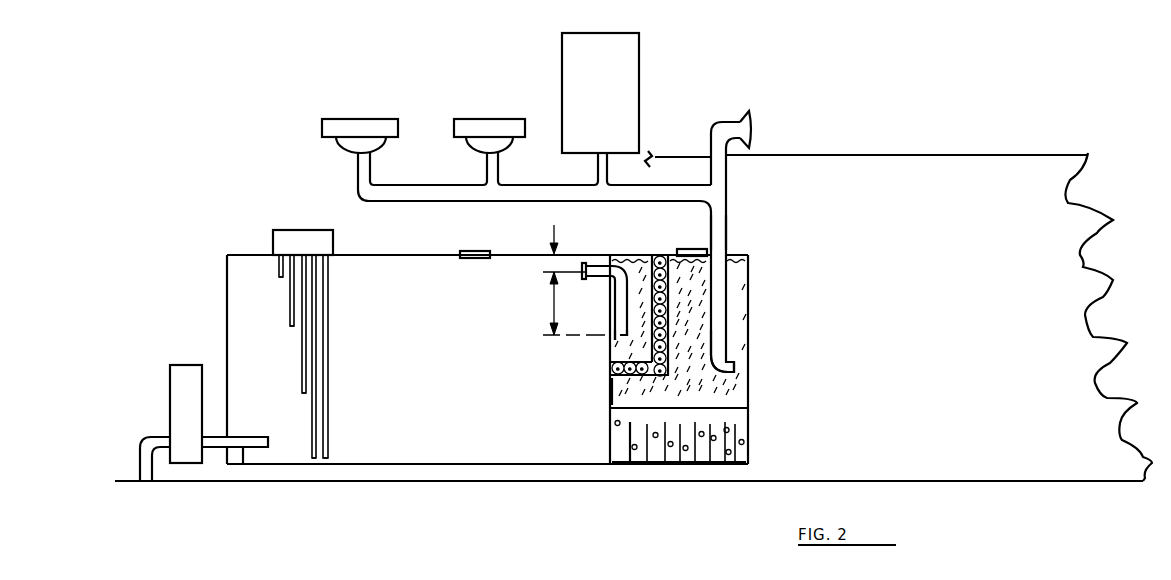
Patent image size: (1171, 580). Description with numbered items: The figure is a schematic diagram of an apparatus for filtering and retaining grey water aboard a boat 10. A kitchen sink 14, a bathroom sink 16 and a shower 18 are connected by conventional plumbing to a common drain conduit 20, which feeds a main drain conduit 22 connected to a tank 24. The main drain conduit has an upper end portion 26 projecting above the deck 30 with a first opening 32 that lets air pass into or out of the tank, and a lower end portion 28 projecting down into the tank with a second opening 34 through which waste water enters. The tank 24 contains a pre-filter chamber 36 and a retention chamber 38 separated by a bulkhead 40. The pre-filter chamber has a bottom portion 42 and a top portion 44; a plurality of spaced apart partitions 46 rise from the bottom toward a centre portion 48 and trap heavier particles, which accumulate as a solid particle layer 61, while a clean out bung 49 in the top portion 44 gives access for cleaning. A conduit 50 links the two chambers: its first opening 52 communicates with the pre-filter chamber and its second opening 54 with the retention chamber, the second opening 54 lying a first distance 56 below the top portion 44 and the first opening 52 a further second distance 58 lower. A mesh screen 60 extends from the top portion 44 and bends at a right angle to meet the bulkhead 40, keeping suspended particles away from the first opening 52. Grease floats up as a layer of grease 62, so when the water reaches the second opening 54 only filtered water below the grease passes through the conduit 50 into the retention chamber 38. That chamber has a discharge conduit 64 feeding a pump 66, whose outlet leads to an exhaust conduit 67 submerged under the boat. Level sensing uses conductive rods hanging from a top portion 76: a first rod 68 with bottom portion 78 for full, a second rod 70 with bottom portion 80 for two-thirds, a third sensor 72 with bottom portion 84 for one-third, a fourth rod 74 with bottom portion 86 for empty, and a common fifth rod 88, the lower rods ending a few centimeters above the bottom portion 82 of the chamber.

The boat 10 is at (918, 291).
The kitchen sink 14 is at (358, 118).
The bathroom sink 16 is at (486, 118).
The shower 18 is at (640, 97).
The common drain conduit 20 is at (428, 203).
The main drain conduit 22 is at (728, 210).
The tank 24 is at (749, 254).
The upper end portion 26 is at (712, 125).
The lower end portion 28 is at (730, 350).
The deck 30 is at (833, 153).
The first opening 32 is at (752, 130).
The second opening 34 is at (735, 367).
The pre-filter chamber 36 is at (715, 395).
The retention chamber 38 is at (425, 447).
The bulkhead 40 is at (614, 412).
The bottom portion 42 is at (670, 463).
The top portion 44 is at (668, 252).
The partitions 46 is at (736, 433).
The centre portion 48 is at (700, 330).
The clean out bung 49 is at (695, 249).
The conduit 50 is at (613, 316).
The first opening 52 is at (612, 338).
The second opening 54 is at (587, 264).
The first distance 56 is at (552, 237).
The second distance 58 is at (552, 305).
The mesh screen 60 is at (614, 370).
The solid particle layer 61 is at (666, 415).
The layer of grease 62 is at (745, 258).
The discharge conduit 64 is at (244, 468).
The pump 66 is at (183, 365).
The exhaust conduit 67 is at (140, 472).
The first rod 68 is at (279, 270).
The second rod 70 is at (290, 308).
The third sensor 72 is at (302, 364).
The fourth rod 74 is at (321, 430).
The top portion 76 is at (365, 255).
The bottom portion 78 is at (281, 278).
The bottom portion 80 is at (294, 326).
The bottom portion 82 is at (318, 462).
The bottom portion 84 is at (303, 394).
The bottom portion 86 is at (297, 464).
The fifth rod 88 is at (331, 428).